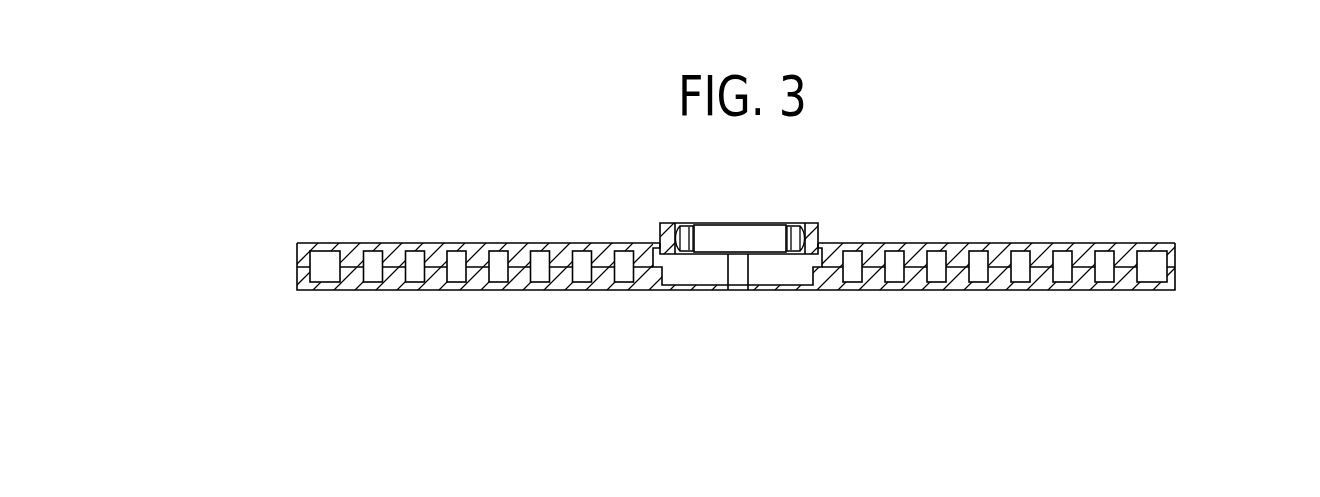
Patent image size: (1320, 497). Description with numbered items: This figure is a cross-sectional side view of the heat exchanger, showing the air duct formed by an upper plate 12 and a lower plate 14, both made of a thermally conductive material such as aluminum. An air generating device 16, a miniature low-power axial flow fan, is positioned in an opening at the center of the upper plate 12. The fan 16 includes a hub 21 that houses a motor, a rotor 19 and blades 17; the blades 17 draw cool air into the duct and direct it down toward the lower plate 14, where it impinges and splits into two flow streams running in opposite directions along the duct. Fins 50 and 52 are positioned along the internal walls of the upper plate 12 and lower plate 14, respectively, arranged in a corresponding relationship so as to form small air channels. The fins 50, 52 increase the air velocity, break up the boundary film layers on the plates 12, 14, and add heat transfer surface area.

The upper plate 12 is at (1177, 245).
The lower plate 14 is at (1177, 278).
The air generating device 16 is at (735, 222).
The blades 17 is at (791, 226).
The rotor 19 is at (737, 292).
The hub 21 is at (725, 250).
The fins 50 is at (478, 246).
The fins 52 is at (397, 284).